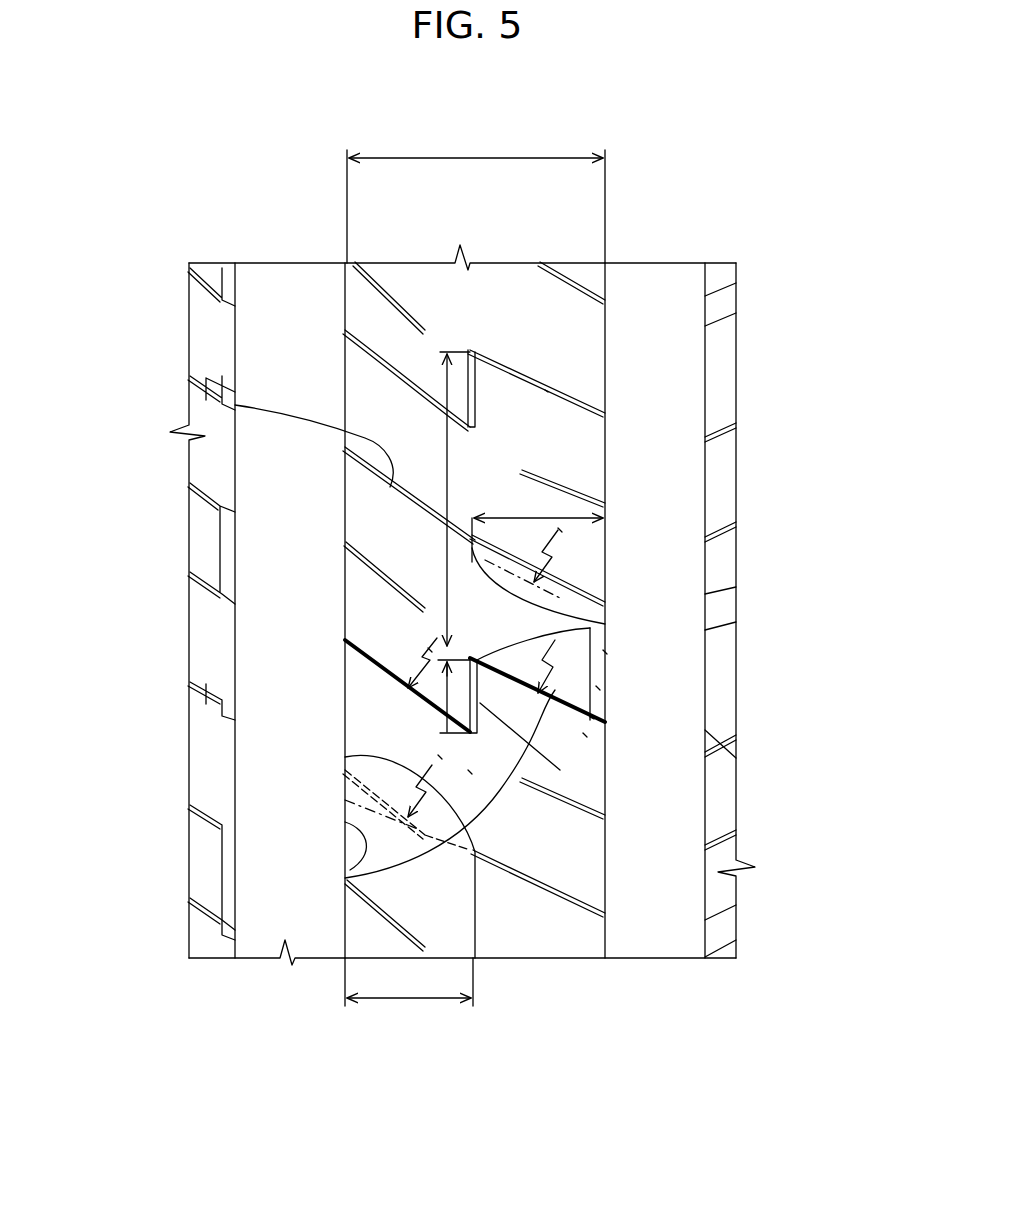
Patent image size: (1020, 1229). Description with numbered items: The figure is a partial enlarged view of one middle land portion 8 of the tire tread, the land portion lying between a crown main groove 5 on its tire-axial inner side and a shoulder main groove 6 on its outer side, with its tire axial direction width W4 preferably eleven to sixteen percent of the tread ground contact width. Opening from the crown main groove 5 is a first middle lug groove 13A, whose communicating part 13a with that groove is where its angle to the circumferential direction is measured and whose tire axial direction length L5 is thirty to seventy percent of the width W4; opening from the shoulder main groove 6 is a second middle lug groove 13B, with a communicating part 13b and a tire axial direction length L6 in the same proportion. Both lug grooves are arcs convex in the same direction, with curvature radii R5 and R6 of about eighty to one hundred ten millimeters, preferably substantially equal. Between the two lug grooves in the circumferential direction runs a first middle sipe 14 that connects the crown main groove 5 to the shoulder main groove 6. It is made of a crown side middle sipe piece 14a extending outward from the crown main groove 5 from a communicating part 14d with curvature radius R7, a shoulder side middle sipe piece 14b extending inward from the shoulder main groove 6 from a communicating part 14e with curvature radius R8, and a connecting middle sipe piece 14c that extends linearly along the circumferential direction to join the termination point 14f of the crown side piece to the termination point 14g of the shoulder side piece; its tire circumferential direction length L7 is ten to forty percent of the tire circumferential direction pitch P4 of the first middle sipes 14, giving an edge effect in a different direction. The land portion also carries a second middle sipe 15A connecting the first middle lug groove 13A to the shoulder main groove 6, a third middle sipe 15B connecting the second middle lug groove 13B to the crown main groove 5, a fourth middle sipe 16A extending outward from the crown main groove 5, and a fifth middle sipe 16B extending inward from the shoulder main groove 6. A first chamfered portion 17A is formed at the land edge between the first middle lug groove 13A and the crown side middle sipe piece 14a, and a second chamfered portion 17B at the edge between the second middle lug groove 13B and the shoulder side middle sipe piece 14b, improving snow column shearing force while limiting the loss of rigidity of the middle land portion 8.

The crown main groove 5 is at (650, 263).
The shoulder main groove 6 is at (278, 272).
The middle land portion 8 is at (497, 285).
The first middle lug groove 13A is at (565, 608).
The communicating part 13a is at (560, 624).
The second middle lug groove 13B is at (440, 905).
The communicating part 13b is at (470, 765).
The first middle sipe 14 is at (545, 390).
The crown side middle sipe piece 14a is at (598, 688).
The shoulder side middle sipe piece 14b is at (478, 735).
The connecting middle sipe piece 14c is at (585, 735).
The communicating part 14d is at (590, 717).
The communicating part 14e is at (440, 695).
The termination point 14f is at (590, 628).
The termination point 14g is at (584, 725).
The second middle sipe 15A is at (235, 405).
The third middle sipe 15B is at (518, 845).
The fourth middle sipe 16A is at (530, 470).
The fifth middle sipe 16B is at (380, 580).
The first chamfered portion 17A is at (585, 712).
The second chamfered portion 17B is at (360, 652).
The tire circumferential direction pitch P4 is at (447, 455).
The tire axial direction width W4 is at (476, 194).
The tire axial direction length L5 is at (580, 500).
The tire axial direction length L6 is at (409, 996).
The tire circumferential direction length L7 is at (440, 757).
The curvature radius R5 is at (560, 530).
The curvature radius R6 is at (470, 772).
The curvature radius R7 is at (605, 652).
The curvature radius R8 is at (430, 650).